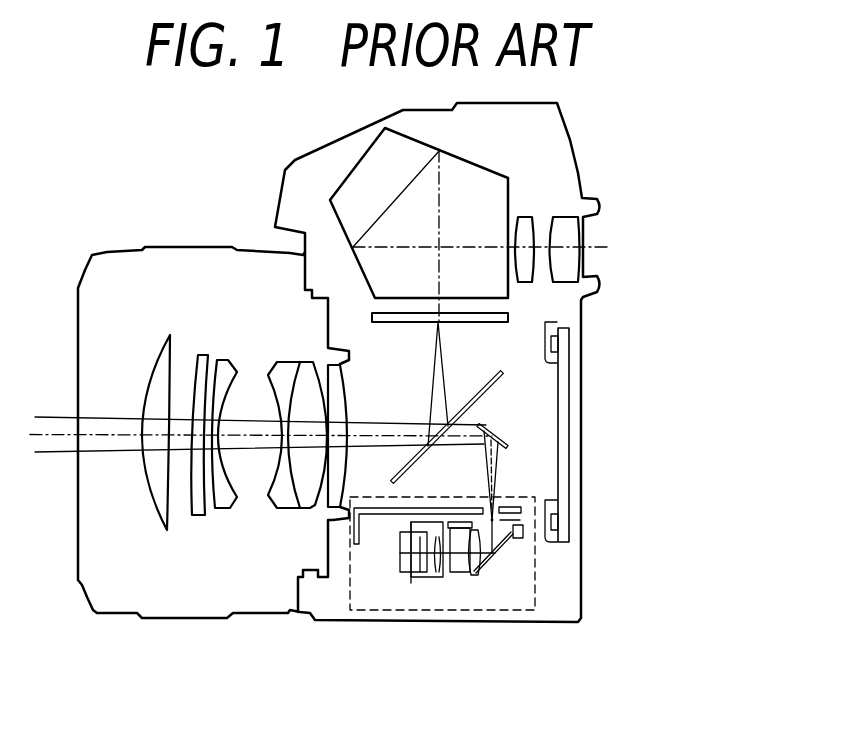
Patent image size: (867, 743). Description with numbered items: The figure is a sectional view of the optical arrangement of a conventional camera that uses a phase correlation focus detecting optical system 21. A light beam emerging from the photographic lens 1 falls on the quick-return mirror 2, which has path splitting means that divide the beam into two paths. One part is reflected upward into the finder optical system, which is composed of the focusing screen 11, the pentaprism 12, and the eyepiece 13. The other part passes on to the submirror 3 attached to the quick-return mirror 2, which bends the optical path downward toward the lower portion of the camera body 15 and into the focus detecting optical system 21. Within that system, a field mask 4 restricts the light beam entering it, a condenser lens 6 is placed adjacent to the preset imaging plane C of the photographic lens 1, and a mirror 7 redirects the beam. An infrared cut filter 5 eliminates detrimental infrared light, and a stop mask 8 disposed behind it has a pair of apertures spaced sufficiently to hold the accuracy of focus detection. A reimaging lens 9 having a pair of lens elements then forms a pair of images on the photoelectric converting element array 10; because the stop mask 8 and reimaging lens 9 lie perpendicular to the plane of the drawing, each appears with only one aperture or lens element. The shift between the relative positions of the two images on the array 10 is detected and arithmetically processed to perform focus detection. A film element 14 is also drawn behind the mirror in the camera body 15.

The photographic lens 1 is at (318, 532).
The quick-return mirror 2 is at (482, 385).
The submirror 3 is at (502, 433).
The field mask 4 is at (517, 517).
The infrared cut filter 5 is at (475, 578).
The condenser lens 6 is at (517, 533).
The mirror 7 is at (497, 560).
The stop mask 8 is at (447, 577).
The reimaging lens 9 is at (437, 575).
The photoelectric converting element array 10 is at (390, 543).
The focusing screen 11 is at (397, 322).
The pentaprism 12 is at (482, 168).
The eyepiece 13 is at (580, 210).
The film 14 is at (570, 372).
The camera body 15 is at (284, 621).
The focus detecting optical system 21 is at (513, 612).
The preset imaging plane C is at (493, 500).